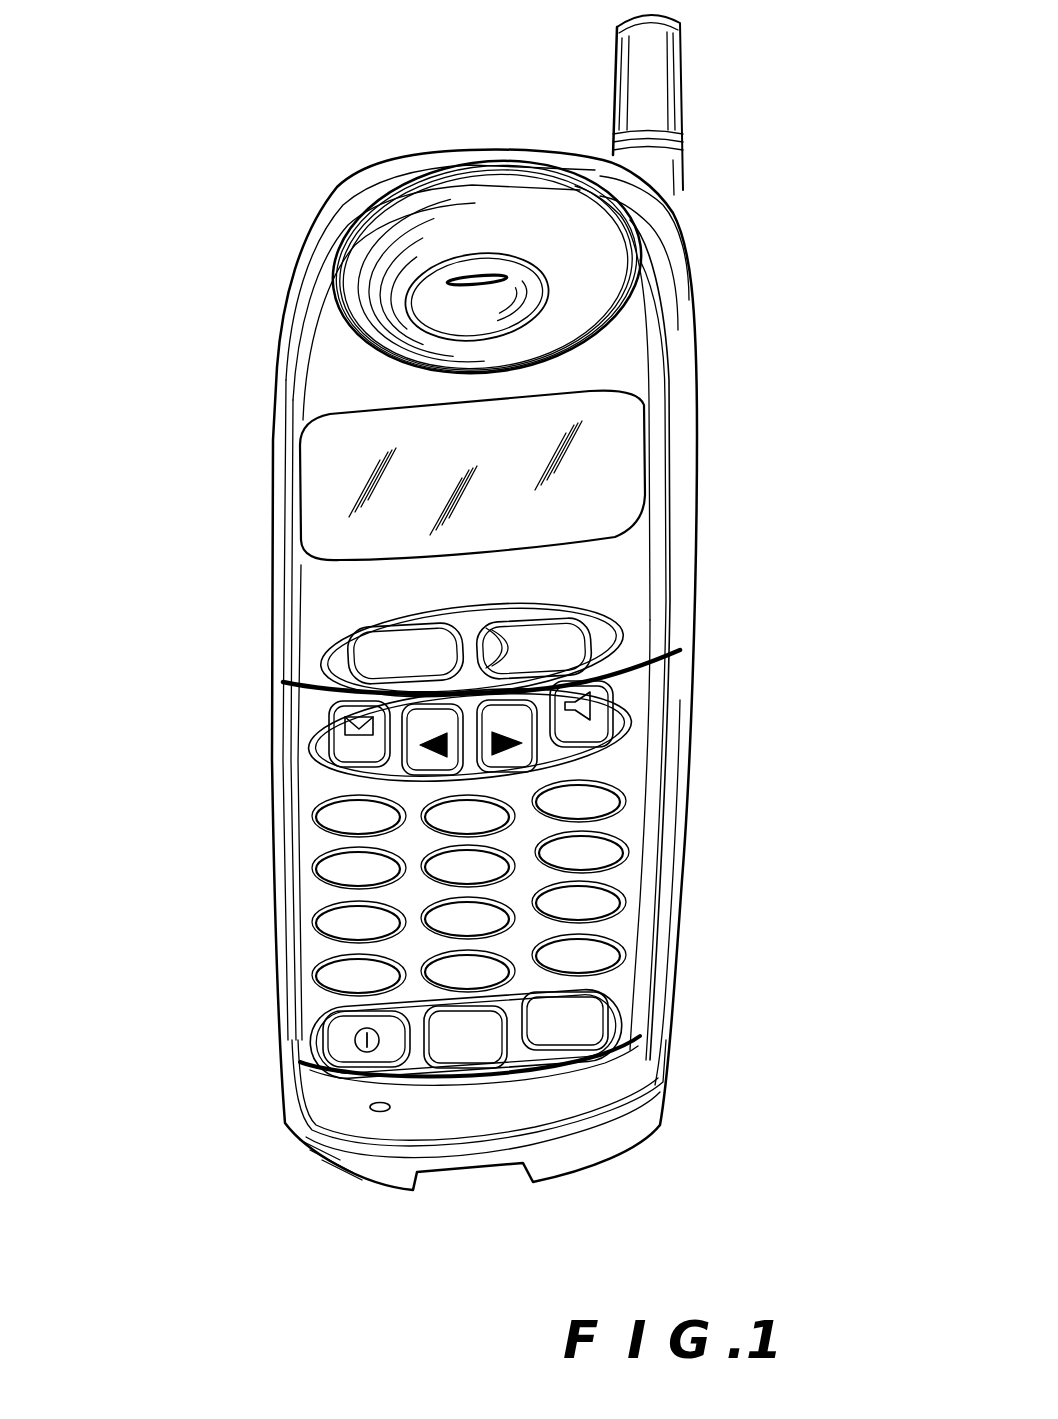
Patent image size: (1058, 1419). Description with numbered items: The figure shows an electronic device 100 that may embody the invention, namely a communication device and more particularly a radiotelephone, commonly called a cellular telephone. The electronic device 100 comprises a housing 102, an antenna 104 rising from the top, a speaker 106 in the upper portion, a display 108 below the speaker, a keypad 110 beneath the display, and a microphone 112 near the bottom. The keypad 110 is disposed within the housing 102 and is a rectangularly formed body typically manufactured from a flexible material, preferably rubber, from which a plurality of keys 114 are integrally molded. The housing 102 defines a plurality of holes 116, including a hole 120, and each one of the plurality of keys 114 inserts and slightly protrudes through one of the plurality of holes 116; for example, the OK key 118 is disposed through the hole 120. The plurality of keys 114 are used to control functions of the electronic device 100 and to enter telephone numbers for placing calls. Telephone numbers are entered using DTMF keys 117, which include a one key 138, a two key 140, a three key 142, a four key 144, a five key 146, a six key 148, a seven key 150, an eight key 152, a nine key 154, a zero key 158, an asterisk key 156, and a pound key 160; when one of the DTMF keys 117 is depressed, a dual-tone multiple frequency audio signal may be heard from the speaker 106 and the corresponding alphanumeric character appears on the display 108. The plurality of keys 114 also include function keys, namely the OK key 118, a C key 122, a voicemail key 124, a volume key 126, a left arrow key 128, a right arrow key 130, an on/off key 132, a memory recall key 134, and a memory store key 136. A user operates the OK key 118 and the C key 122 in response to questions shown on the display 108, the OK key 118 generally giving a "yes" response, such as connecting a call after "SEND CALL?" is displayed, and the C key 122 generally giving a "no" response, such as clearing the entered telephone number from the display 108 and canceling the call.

The electronic device 100 is at (693, 1292).
The housing 102 is at (308, 593).
The antenna 104 is at (618, 72).
The speaker 106 is at (488, 265).
The display 108 is at (335, 440).
The keypad 110 is at (208, 690).
The microphone 112 is at (370, 1106).
The plurality of keys 114 is at (306, 953).
The plurality of holes 116 is at (652, 760).
The DTMF keys 117 is at (780, 875).
The OK key 118 is at (562, 647).
The hole 120 is at (553, 620).
The C key 122 is at (370, 657).
The voicemail key 124 is at (362, 745).
The volume key 126 is at (600, 697).
The left arrow key 128 is at (417, 757).
The right arrow key 130 is at (523, 748).
The on/off key 132 is at (347, 1030).
The memory recall key 134 is at (490, 1048).
The memory store key 136 is at (582, 1010).
The one key 138 is at (326, 819).
The two key 140 is at (432, 819).
The three key 142 is at (605, 802).
The four key 144 is at (330, 875).
The five key 146 is at (429, 875).
The six key 148 is at (602, 845).
The seven key 150 is at (326, 927).
The eight key 152 is at (493, 913).
The nine key 154 is at (600, 903).
The asterisk key 156 is at (335, 976).
The zero key 158 is at (490, 970).
The pound key 160 is at (605, 955).